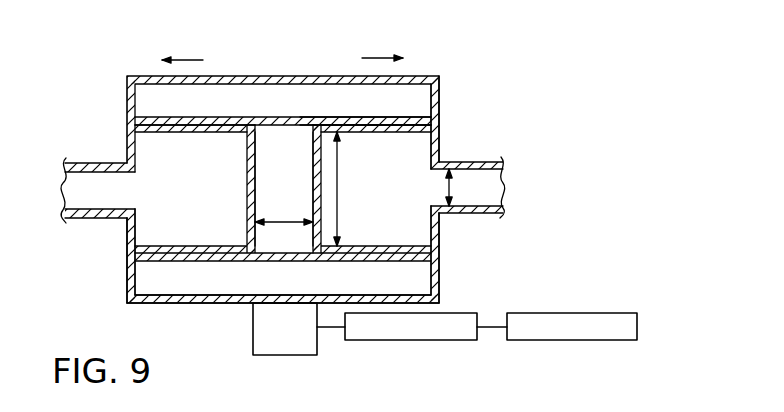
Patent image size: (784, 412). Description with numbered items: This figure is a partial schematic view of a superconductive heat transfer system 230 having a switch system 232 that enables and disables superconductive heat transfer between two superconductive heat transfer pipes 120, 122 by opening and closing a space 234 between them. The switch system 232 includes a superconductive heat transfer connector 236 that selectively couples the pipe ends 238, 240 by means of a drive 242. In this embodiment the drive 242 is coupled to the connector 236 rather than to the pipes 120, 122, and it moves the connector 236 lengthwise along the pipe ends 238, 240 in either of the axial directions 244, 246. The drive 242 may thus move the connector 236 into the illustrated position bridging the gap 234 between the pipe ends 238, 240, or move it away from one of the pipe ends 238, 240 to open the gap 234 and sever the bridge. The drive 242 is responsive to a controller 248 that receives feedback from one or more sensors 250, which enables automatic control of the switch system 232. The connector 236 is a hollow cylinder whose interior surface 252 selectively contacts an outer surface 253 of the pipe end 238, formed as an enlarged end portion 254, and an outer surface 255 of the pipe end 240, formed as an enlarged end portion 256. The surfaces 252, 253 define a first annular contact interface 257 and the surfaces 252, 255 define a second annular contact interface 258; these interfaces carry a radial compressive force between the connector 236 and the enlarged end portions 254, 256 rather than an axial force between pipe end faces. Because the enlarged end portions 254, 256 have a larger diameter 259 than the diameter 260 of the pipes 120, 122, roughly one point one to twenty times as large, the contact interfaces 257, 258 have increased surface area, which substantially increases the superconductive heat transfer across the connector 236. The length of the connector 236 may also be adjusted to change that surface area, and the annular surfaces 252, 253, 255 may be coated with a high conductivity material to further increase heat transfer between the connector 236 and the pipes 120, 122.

The superconductive heat transfer pipe 120 is at (66, 178).
The superconductive heat transfer pipe 122 is at (503, 176).
The superconductive heat transfer system 230 is at (113, 75).
The switch system 232 is at (222, 312).
The space (gap) 234 is at (285, 218).
The superconductive heat transfer connector 236 is at (436, 96).
The pipe end 238 is at (114, 232).
The pipe end 240 is at (456, 233).
The drive 242 is at (283, 357).
The axial direction 244 is at (184, 60).
The axial direction 246 is at (378, 58).
The controller 248 is at (412, 342).
The sensor 250 is at (572, 342).
The interior surface 252 is at (273, 127).
The outer surface 253 is at (177, 118).
The enlarged end portion 254 is at (139, 232).
The outer surface 255 is at (387, 116).
The enlarged end portion 256 is at (432, 218).
The first annular contact interface 257 is at (226, 131).
The second annular contact interface 258 is at (417, 132).
The diameter of enlarged end portions 259 is at (340, 214).
The diameter of pipes 260 is at (456, 188).